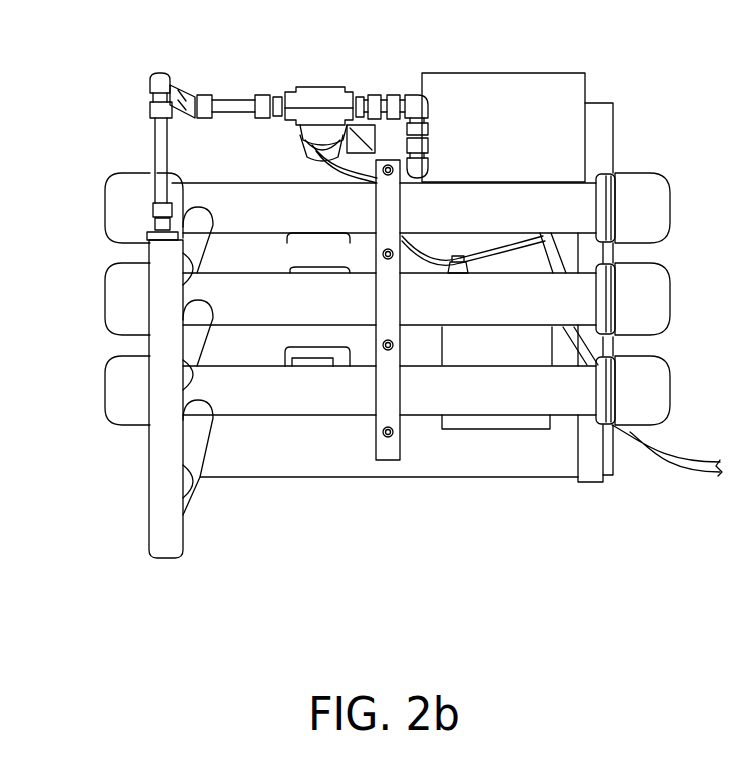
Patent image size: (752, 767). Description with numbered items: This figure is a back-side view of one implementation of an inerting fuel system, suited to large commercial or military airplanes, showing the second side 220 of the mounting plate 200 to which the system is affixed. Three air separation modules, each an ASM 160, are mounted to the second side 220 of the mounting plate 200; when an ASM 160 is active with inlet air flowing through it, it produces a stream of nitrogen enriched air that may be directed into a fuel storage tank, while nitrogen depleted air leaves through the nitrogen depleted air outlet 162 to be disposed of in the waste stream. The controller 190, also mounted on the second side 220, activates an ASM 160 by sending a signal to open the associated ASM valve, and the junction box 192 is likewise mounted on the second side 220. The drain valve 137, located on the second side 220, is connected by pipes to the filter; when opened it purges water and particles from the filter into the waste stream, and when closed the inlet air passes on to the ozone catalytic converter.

The drain valve 137 is at (320, 90).
The junction box 192 is at (516, 85).
The ASM 160 is at (113, 378).
The nitrogen depleted air outlet 162 is at (176, 545).
The controller 190 is at (525, 347).
The mounting plate 200 is at (297, 457).
The second side 220 is at (530, 452).